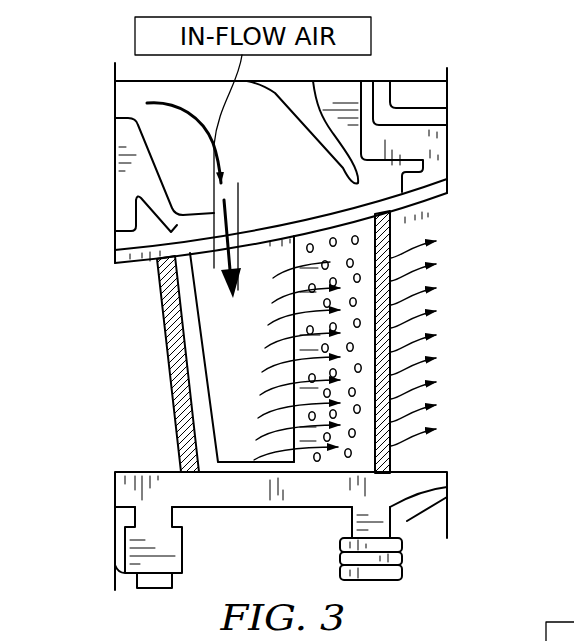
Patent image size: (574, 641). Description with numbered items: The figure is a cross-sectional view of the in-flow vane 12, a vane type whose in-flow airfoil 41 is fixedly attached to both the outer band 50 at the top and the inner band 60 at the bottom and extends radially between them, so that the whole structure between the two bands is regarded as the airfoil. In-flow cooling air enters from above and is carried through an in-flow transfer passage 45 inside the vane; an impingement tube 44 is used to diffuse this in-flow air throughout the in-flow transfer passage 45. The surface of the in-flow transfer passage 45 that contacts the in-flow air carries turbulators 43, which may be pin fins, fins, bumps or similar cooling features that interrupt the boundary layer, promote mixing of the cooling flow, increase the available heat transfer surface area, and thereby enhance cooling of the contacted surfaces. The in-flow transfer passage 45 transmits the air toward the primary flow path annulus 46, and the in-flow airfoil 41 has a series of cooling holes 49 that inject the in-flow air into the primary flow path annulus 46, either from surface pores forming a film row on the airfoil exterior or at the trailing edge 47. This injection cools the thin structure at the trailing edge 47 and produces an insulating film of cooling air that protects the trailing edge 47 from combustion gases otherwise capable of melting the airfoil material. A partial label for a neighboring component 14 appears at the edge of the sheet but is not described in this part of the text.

The in-flow vane 12 is at (82, 94).
The heat exchanger (adjacent figure) 14 is at (500, 640).
The in-flow airfoil 41 is at (148, 284).
The turbulators 43 is at (433, 277).
The impingement tube 44 is at (307, 273).
The in-flow transfer passage 45 is at (341, 252).
The primary flow path annulus 46 is at (100, 290).
The trailing edge 47 is at (436, 395).
The cooling holes 49 is at (402, 309).
The outer band 50 is at (459, 188).
The inner band 60 is at (460, 497).